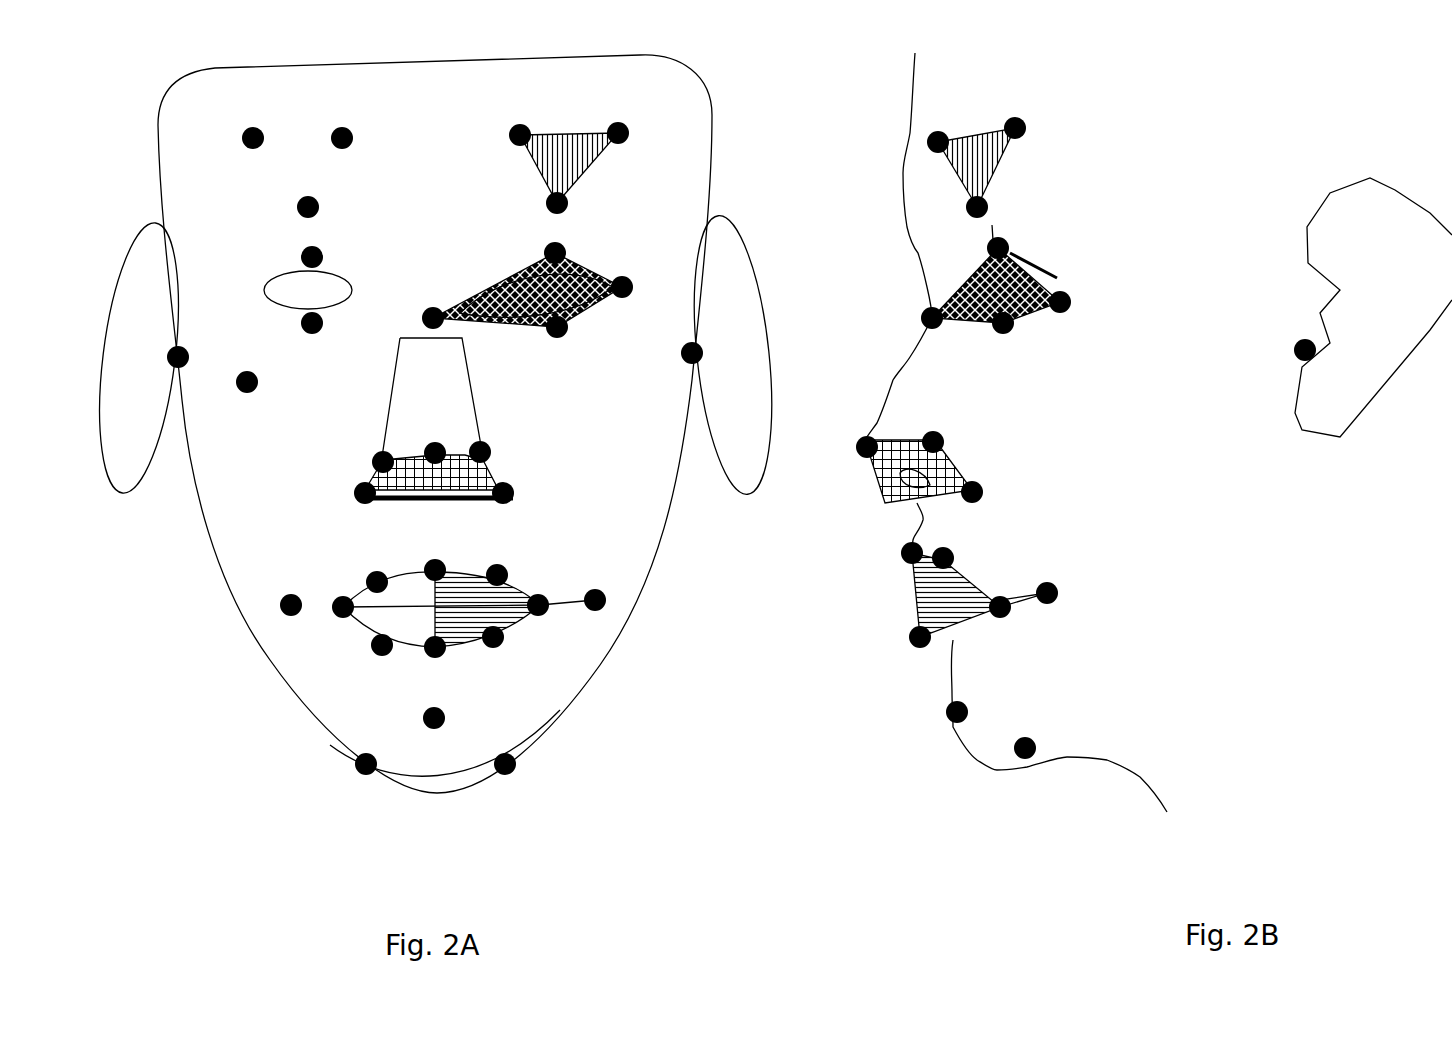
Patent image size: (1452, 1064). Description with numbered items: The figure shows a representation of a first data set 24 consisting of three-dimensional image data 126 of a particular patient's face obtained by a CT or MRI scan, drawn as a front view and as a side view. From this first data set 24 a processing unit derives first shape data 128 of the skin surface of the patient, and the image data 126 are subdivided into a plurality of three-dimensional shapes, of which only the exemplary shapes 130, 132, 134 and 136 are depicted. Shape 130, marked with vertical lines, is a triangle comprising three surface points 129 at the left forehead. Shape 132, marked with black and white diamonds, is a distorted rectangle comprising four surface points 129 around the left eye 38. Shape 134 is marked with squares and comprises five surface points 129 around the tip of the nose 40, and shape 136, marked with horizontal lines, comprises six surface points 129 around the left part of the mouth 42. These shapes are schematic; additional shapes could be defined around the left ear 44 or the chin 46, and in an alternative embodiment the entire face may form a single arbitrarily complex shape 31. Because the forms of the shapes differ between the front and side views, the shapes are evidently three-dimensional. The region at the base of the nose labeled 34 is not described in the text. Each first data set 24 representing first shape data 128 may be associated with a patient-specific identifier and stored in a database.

In FIG. 2A, the first data set 24 is at (878, 112).
In FIG. 2A, the single arbitrarily complex shape 31 is at (248, 228).
In FIG. 2B, the single arbitrarily complex shape 31 is at (1298, 126).
In FIG. 2A, the nose base region 34 is at (373, 475).
In FIG. 2A, the left eye 38 is at (551, 294).
In FIG. 2B, the left eye 38 is at (984, 292).
In FIG. 2A, the nose 40 is at (390, 408).
In FIG. 2B, the nose 40 is at (900, 380).
In FIG. 2A, the mouth 42 is at (454, 622).
In FIG. 2B, the mouth 42 is at (956, 584).
In FIG. 2A, the left ear 44 is at (700, 490).
In FIG. 2B, the left ear 44 is at (1340, 438).
In FIG. 2A, the chin 46 is at (440, 802).
In FIG. 2B, the chin 46 is at (1023, 817).
In FIG. 2A, the three-dimensional image data 126 is at (893, 173).
In FIG. 2A, the first shape data 128 is at (528, 170).
In FIG. 2B, the first shape data 128 is at (1027, 153).
In FIG. 2A, the surface points 129 is at (431, 307).
In FIG. 2B, the surface points 129 is at (1302, 345).
In FIG. 2A, the shape 130 is at (593, 175).
In FIG. 2B, the shape 130 is at (967, 133).
In FIG. 2A, the shape 132 is at (590, 318).
In FIG. 2B, the shape 132 is at (1040, 313).
In FIG. 2B, the shape 134 is at (960, 457).
In FIG. 2A, the shape 136 is at (520, 630).
In FIG. 2B, the shape 136 is at (973, 623).